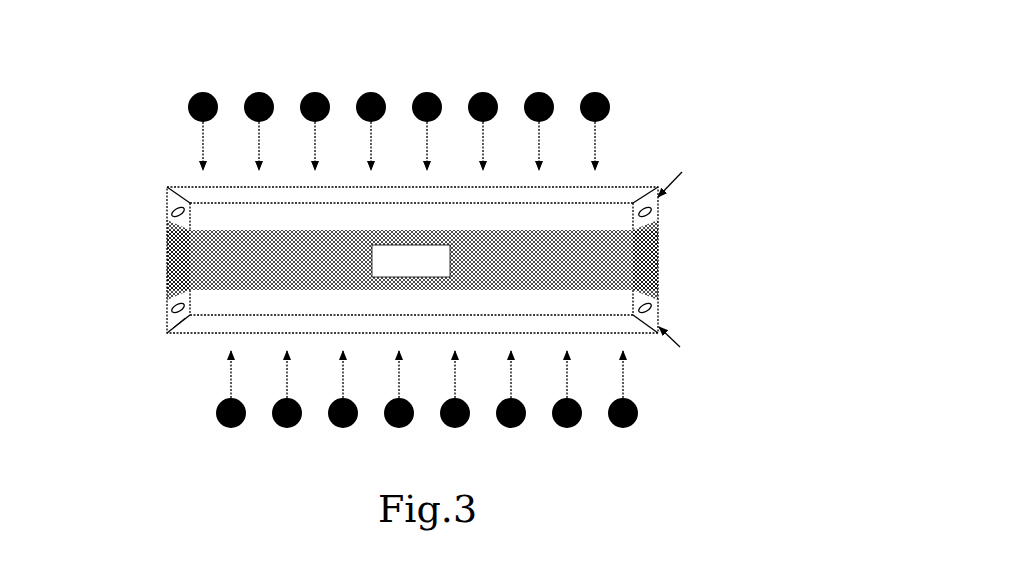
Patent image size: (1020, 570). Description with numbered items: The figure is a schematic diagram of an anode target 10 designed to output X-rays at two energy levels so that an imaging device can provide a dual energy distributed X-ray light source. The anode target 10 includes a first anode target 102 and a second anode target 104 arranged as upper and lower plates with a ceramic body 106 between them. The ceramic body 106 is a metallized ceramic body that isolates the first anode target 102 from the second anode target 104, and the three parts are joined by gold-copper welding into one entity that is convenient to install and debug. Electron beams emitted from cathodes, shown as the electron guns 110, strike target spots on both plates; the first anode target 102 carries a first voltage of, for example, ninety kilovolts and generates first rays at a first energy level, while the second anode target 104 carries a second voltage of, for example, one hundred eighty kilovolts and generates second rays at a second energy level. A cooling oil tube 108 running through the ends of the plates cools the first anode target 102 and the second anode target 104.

The anode target 10 is at (72, 28).
The first anode target 102 is at (622, 185).
The second anode target 104 is at (622, 336).
The ceramic body 106 is at (663, 258).
The cooling oil tube 108 is at (170, 210).
The electron guns 110 is at (214, 413).